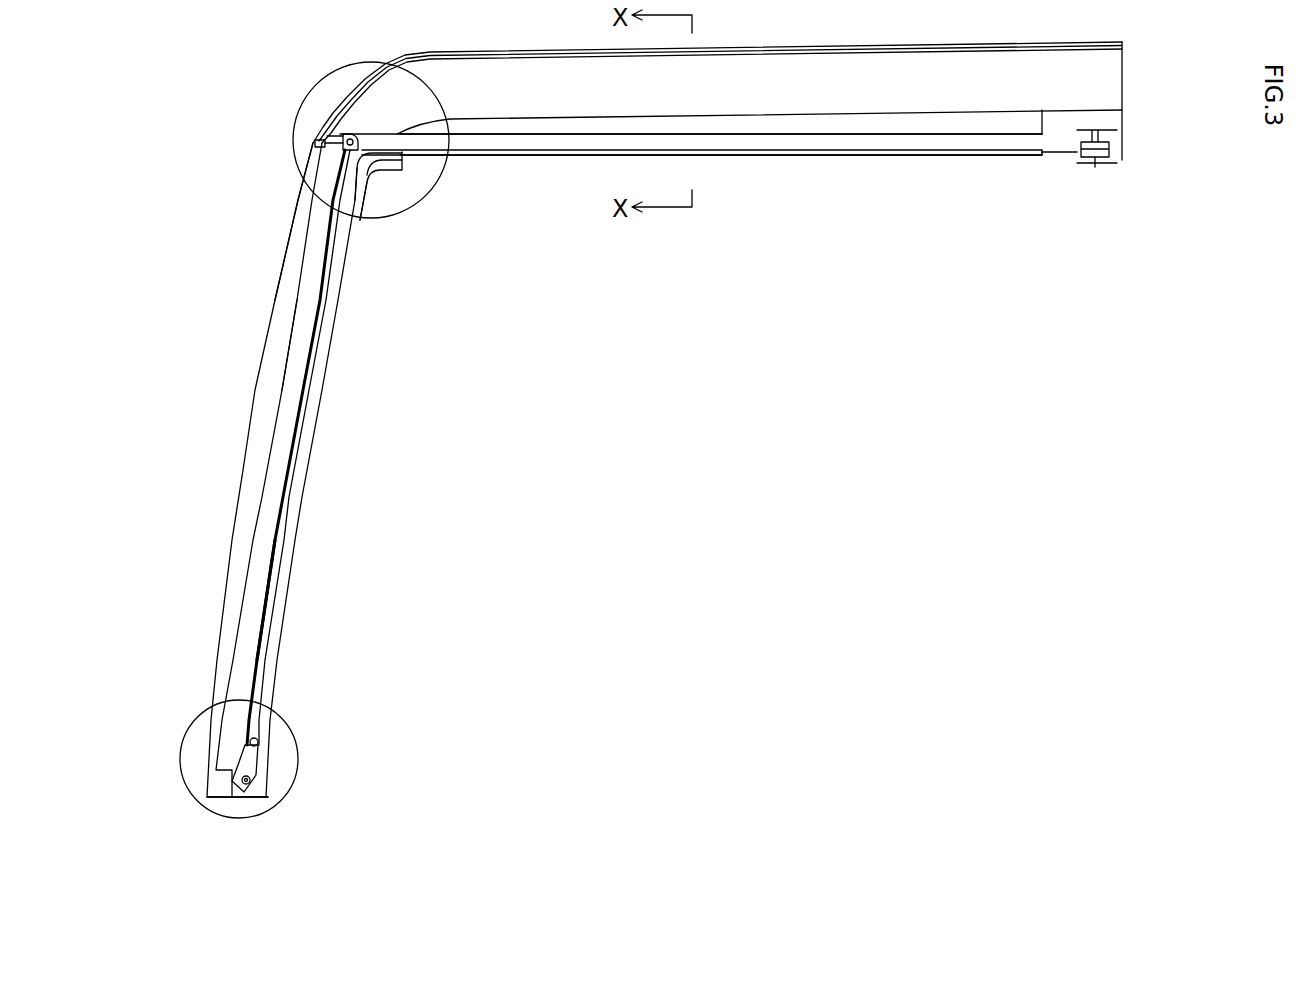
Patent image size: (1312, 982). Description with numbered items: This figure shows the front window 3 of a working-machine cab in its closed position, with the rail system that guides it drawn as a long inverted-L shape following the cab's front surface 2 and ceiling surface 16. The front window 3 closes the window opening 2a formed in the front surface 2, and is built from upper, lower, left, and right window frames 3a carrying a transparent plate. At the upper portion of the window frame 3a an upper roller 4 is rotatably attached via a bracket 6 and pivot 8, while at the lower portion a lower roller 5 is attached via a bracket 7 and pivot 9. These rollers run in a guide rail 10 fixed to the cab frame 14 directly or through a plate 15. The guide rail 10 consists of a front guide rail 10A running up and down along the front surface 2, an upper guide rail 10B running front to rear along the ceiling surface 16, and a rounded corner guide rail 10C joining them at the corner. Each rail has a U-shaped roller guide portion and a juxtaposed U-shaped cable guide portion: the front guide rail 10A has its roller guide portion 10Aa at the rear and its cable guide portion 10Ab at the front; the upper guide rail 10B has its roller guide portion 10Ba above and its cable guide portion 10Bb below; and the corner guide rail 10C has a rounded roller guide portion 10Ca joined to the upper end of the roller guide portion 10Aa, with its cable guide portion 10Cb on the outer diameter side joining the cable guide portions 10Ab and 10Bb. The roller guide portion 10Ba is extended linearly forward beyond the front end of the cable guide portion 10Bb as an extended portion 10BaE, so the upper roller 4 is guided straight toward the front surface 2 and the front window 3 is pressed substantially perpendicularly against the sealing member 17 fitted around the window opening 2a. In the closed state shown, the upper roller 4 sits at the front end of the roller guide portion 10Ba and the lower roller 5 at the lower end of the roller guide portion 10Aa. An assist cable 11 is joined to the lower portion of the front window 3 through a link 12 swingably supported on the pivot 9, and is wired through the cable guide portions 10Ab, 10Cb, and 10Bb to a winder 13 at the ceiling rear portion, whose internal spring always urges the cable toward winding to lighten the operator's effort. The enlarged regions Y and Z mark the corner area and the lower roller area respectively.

The front surface 2 is at (235, 490).
The window opening 2a is at (256, 391).
The front window 3 is at (284, 319).
The window frames 3a is at (275, 455).
The upper roller 4 is at (352, 133).
The lower roller 5 is at (252, 786).
The bracket 6 is at (343, 167).
The bracket 7 is at (240, 760).
The pivot 8 is at (347, 140).
The pivot 9 is at (250, 780).
The guide rail 10 is at (516, 88).
The front guide rail 10A is at (316, 495).
The roller guide portion 10Aa is at (273, 660).
The cable guide portion 10Ab is at (257, 662).
The upper guide rail 10B is at (787, 166).
The roller guide portion 10Ba is at (748, 140).
The extended portion 10BaE is at (373, 143).
The cable guide portion 10Bb is at (868, 157).
The corner guide rail 10C is at (402, 180).
The roller guide portion 10Ca is at (374, 180).
The cable guide portion 10Cb is at (360, 220).
The assist cable 11 is at (977, 153).
The link 12 is at (255, 748).
The winder 13 is at (1100, 150).
The frame 14 is at (890, 75).
The plate 15 is at (988, 120).
The ceiling surface 16 is at (835, 45).
The sealing member 17 is at (340, 150).
The enlarged region Y is at (310, 90).
The enlarged region Z is at (298, 782).